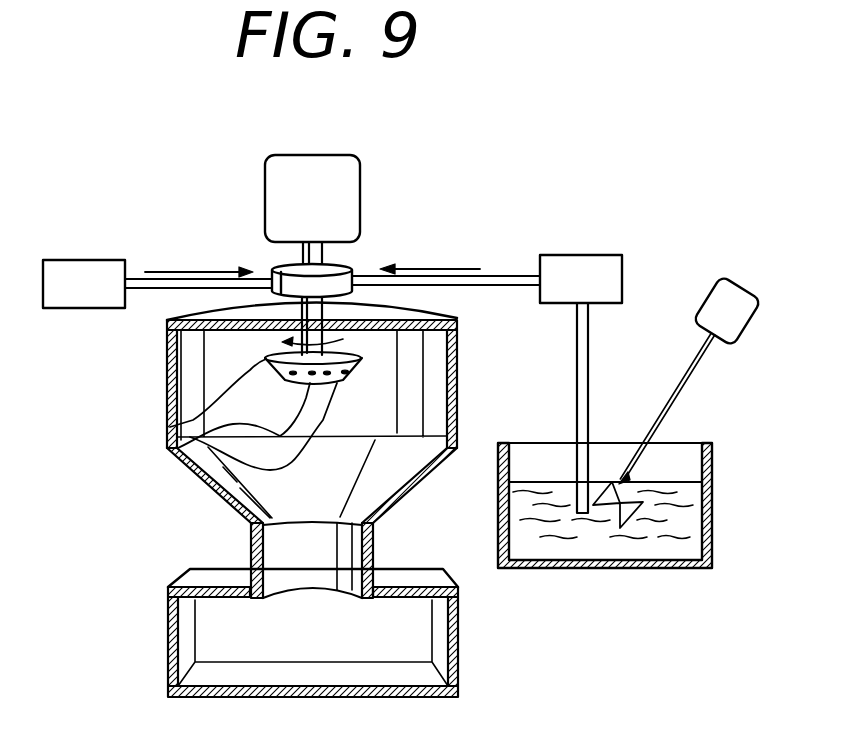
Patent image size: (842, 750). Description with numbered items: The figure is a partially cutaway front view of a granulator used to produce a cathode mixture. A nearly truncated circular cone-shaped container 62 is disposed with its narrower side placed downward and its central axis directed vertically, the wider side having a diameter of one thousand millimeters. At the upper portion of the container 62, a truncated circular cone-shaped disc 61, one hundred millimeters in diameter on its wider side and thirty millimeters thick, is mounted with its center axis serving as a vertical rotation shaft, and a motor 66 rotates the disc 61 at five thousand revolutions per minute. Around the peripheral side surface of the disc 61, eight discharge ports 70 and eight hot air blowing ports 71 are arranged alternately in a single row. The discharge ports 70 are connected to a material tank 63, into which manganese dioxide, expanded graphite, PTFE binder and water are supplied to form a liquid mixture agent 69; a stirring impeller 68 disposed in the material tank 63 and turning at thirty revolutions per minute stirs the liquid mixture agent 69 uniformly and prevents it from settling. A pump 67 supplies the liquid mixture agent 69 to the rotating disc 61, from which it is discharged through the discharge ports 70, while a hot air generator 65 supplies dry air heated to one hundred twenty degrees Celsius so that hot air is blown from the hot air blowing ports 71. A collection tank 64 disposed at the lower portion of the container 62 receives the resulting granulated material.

The disc 61 is at (350, 358).
The container 62 is at (222, 498).
The material tank 63 is at (712, 497).
The collection tank 64 is at (168, 668).
The hot air generator 65 is at (90, 268).
The motor 66 is at (360, 203).
The pump 67 is at (565, 255).
The stirring impeller 68 is at (637, 520).
The liquid mixture agent 69 is at (555, 543).
The discharge ports 70 is at (183, 443).
The hot air blowing ports 71 is at (281, 366).